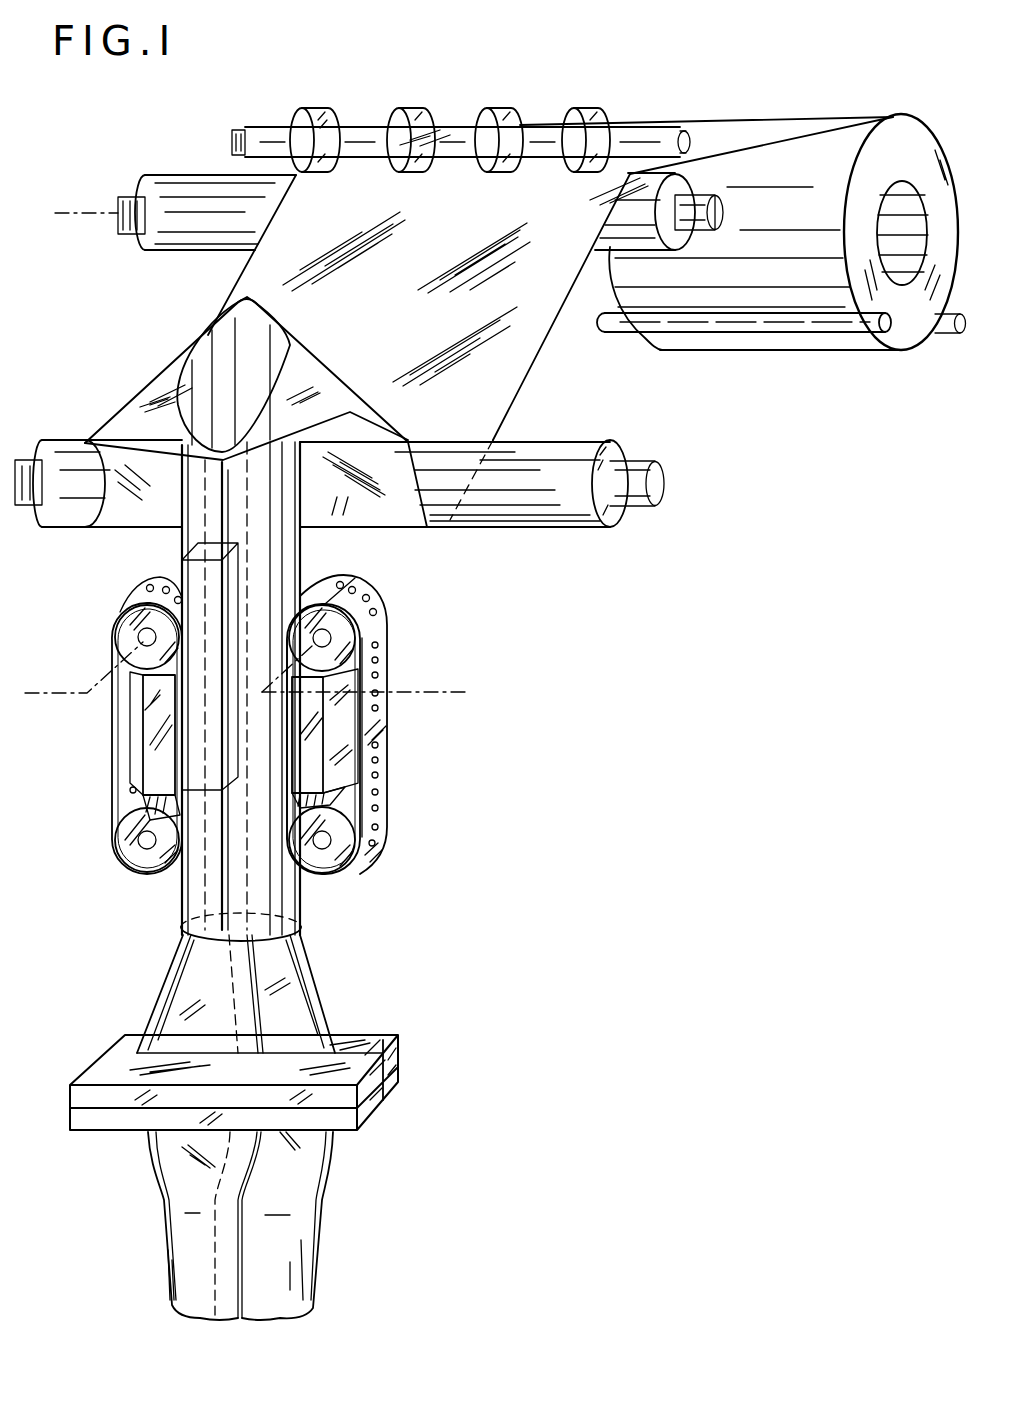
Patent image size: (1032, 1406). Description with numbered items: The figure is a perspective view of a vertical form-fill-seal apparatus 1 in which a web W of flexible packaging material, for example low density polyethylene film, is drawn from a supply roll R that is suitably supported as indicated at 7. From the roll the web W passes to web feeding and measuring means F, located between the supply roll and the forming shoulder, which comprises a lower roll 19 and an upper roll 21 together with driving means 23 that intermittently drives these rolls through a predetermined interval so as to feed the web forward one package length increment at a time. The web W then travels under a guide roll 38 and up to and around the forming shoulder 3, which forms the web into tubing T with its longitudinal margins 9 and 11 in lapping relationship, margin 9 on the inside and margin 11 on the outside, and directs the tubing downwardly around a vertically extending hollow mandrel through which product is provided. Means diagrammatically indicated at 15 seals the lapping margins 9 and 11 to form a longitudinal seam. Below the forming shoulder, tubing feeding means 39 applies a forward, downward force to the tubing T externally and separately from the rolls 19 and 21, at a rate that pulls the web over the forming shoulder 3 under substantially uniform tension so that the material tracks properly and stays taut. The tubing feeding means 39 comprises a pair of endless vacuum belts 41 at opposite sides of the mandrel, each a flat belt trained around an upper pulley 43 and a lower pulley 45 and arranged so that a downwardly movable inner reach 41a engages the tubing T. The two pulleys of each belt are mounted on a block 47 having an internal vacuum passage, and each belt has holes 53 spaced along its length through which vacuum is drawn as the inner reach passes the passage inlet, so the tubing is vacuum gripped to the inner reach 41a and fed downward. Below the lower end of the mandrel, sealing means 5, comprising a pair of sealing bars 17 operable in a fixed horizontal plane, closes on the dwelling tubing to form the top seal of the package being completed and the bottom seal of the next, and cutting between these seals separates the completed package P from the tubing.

The vertical form-fill-seal apparatus 1 is at (495, 779).
The forming shoulder 3 is at (104, 392).
The sealing means 5 is at (280, 1109).
The roll support 7 is at (958, 334).
The longitudinal margin 9 is at (200, 482).
The longitudinal margin 11 is at (217, 495).
The longitudinal seam sealing means 15 is at (178, 562).
The sealing bar 17 is at (385, 1035).
The lower roll 19 is at (172, 252).
The upper roll 21 is at (300, 110).
The driving means 23 is at (72, 221).
The guide roll 38 is at (628, 526).
The tubing feeding means 39 is at (95, 765).
The vacuum belt 41 is at (257, 738).
The inner reach 41a is at (288, 813).
The upper pulley 43 is at (130, 636).
The lower pulley 45 is at (130, 850).
The block 47 is at (145, 725).
The holes 53 is at (380, 809).
The web feeding and measuring means F is at (457, 113).
The supply roll R is at (893, 128).
The web W is at (495, 378).
The tubing T is at (172, 905).
The package P is at (318, 1240).